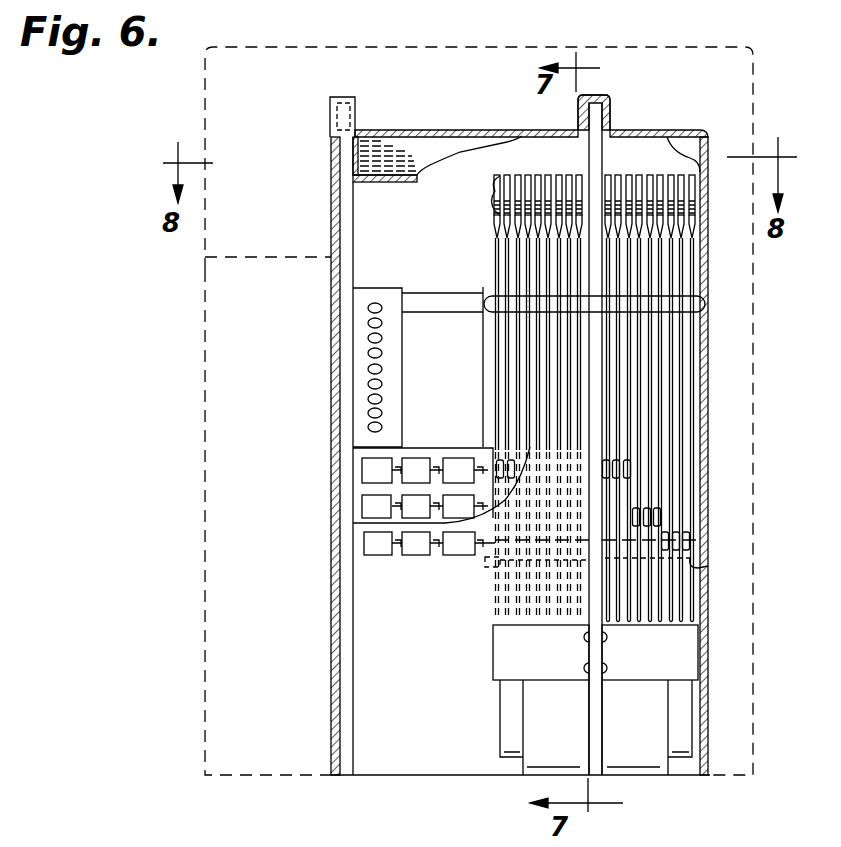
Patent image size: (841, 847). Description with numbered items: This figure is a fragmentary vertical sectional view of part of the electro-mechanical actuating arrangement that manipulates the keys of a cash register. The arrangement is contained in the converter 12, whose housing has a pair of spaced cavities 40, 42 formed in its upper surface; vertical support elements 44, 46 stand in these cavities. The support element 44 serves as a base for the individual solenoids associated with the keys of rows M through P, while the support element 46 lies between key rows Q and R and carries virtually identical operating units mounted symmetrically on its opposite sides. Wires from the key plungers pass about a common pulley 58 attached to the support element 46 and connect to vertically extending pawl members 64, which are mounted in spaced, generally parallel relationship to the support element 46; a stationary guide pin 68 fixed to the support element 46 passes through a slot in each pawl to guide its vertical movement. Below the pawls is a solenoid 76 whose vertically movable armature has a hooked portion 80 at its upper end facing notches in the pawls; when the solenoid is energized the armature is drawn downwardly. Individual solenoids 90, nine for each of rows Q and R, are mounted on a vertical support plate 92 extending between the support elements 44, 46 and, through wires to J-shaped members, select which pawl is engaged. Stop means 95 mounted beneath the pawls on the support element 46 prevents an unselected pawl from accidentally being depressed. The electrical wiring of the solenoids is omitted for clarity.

The converter 12 is at (331, 655).
The cavity 40 is at (345, 122).
The cavity 42 is at (596, 112).
The vertical support element 44 is at (355, 717).
The vertical support element 46 is at (605, 710).
The common pulley 58 is at (500, 177).
The pawl members 64 is at (497, 265).
The stationary guide pin 68 is at (490, 310).
The solenoid 76 is at (568, 750).
The hooked portion 80 is at (705, 567).
The individual solenoids 90 is at (376, 556).
The vertical support plate 92 is at (442, 641).
The stop means 95 is at (500, 672).